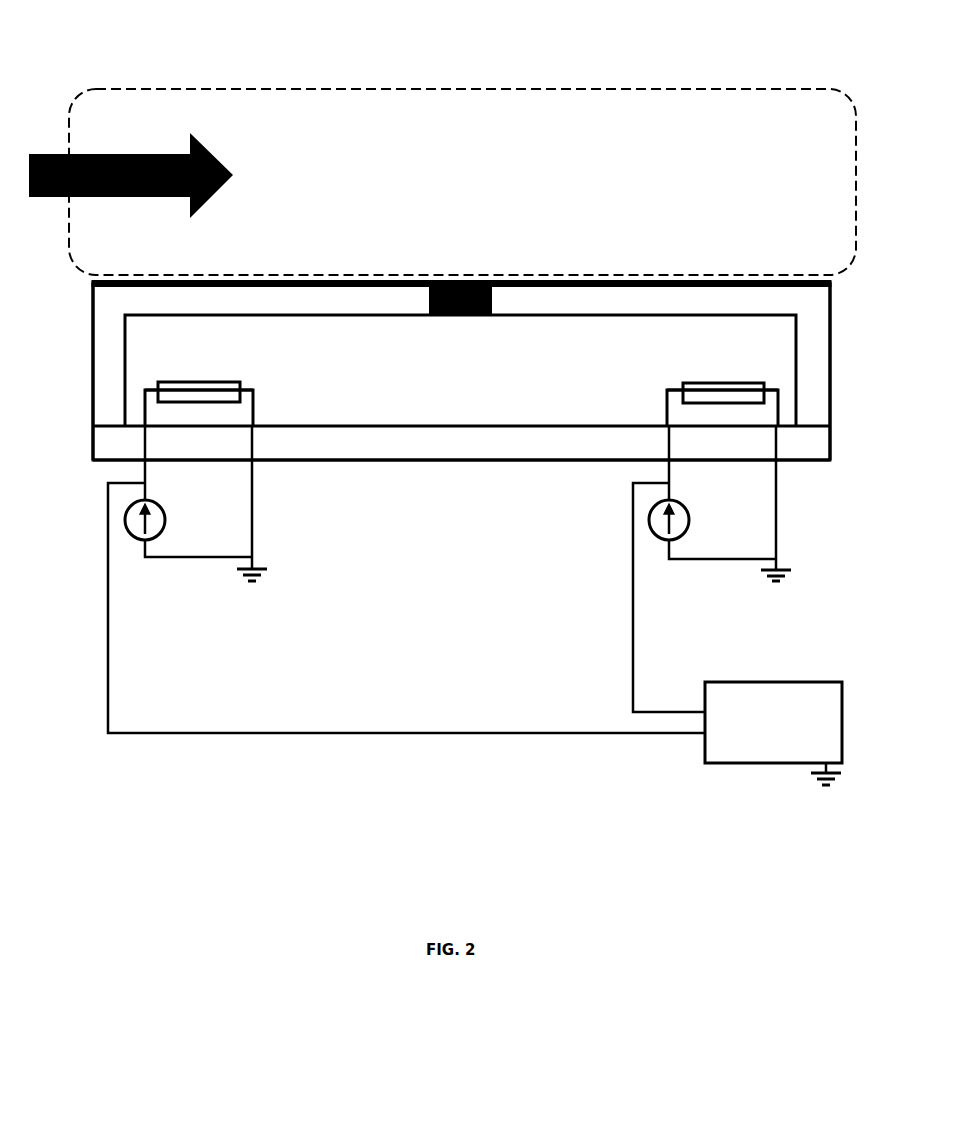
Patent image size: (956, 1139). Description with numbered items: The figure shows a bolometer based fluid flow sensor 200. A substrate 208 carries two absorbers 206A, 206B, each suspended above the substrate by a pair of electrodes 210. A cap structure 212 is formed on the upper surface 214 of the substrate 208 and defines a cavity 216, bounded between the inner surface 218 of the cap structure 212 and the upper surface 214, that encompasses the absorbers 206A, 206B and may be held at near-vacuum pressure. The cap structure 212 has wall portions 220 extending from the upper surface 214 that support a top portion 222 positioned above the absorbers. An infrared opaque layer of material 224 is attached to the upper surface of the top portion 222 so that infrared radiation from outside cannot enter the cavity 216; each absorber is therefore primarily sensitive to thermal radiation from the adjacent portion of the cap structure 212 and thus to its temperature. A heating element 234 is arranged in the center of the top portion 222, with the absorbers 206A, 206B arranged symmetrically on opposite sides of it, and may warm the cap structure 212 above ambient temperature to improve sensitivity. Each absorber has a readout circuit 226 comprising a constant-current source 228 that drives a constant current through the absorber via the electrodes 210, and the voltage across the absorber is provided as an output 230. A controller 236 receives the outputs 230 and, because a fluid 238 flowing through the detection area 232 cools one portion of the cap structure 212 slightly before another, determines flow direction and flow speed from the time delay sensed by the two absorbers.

The fluid flow sensor 200 is at (790, 22).
The detection area 232 is at (237, 102).
The fluid 238 is at (125, 155).
The cap structure 212 is at (777, 298).
The wall portions 220 is at (98, 353).
The top portion 222 is at (578, 303).
The infrared opaque layer of material 224 is at (462, 280).
The heating element 234 is at (472, 316).
The inner surface 218 is at (522, 317).
The cavity 216 is at (391, 324).
The upper surface 214 is at (465, 426).
The substrate 208 is at (480, 447).
The absorber 206A is at (175, 390).
The absorber 206B is at (697, 392).
The electrodes 210 is at (243, 389).
The readout circuit 226 is at (271, 516).
The constant-current source 228 is at (162, 530).
The output 230 is at (110, 660).
The controller 236 is at (759, 682).